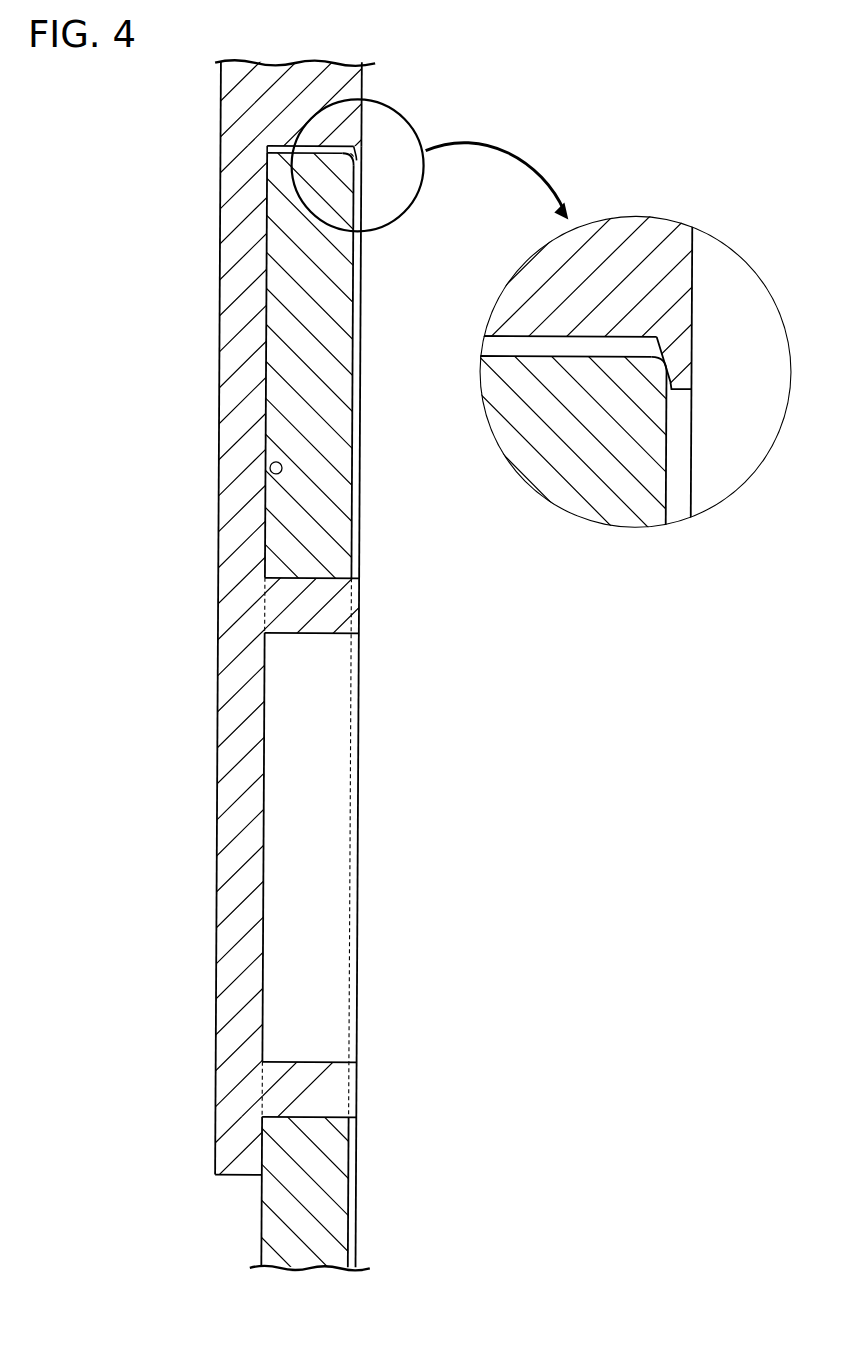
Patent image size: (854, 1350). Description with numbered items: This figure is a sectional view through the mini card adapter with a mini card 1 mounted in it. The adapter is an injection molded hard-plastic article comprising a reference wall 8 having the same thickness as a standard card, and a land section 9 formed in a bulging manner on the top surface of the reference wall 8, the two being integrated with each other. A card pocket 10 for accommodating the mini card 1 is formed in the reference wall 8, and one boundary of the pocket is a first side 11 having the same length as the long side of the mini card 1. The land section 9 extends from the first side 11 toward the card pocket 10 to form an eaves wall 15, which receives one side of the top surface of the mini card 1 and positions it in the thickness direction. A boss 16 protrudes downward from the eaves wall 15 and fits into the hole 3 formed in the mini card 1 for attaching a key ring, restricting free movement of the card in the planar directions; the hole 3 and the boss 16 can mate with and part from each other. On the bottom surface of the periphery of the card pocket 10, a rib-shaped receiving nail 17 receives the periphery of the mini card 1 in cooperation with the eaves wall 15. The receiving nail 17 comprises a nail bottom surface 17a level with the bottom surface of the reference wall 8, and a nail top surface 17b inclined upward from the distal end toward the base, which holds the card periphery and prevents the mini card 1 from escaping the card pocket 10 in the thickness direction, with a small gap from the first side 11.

The mini card 1 is at (341, 1183).
The hole 3 is at (315, 1117).
The reference wall 8 is at (363, 90).
The land section 9 is at (218, 297).
The card pocket 10 is at (270, 470).
The first side 11 is at (266, 162).
The eaves wall 15 is at (216, 1128).
The boss 16 is at (322, 1062).
The receiving nail 17 is at (357, 158).
The nail bottom surface 17a is at (693, 372).
The nail top surface 17b is at (663, 395).